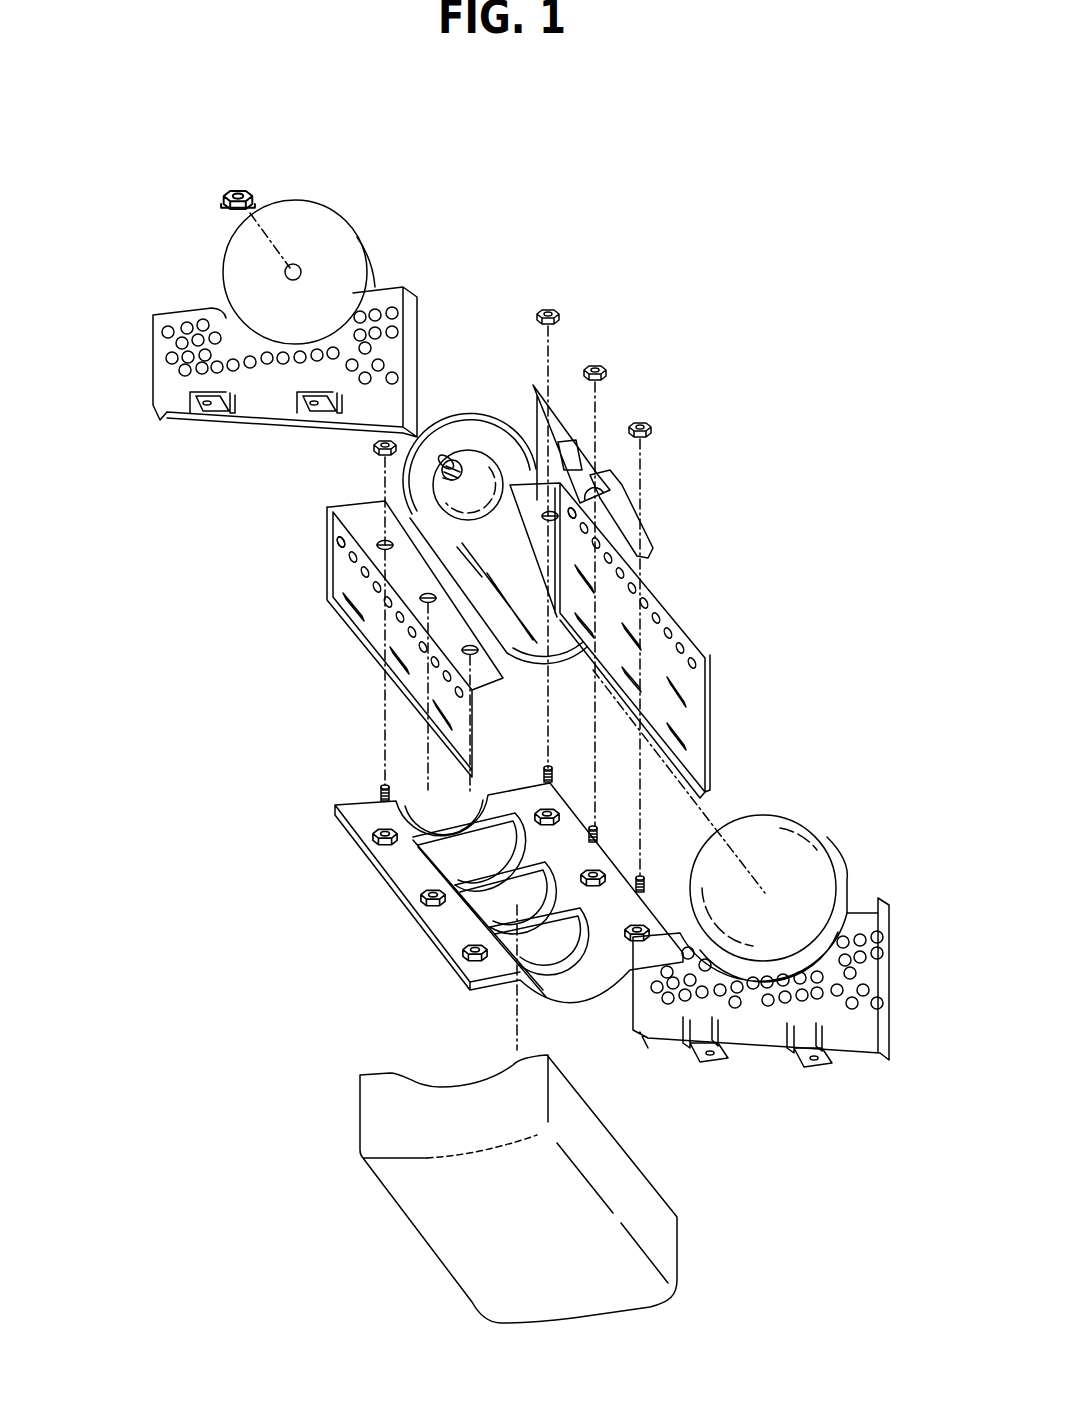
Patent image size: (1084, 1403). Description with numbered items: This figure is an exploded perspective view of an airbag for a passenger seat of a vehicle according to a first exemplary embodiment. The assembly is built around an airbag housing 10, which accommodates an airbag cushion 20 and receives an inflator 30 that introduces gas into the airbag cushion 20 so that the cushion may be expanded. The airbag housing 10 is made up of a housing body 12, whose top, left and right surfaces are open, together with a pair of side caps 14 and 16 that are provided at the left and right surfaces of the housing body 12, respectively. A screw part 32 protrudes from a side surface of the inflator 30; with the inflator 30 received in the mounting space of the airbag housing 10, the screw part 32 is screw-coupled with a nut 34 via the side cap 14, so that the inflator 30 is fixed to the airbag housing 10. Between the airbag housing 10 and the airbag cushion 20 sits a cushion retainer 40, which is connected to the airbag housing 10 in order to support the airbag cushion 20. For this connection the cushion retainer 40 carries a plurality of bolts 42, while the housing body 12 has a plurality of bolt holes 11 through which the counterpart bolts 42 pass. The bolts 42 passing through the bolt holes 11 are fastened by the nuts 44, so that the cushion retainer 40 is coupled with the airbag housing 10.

The airbag housing 10 is at (350, 650).
The bolt holes 11 is at (560, 510).
The housing body 12 is at (328, 597).
The side cap 14 is at (163, 395).
The side cap 16 is at (663, 1040).
The airbag cushion 20 is at (383, 1113).
The inflator 30 is at (487, 447).
The screw part 32 is at (452, 460).
The nut 34 is at (246, 192).
The cushion retainer 40 is at (389, 908).
The bolts 42 is at (560, 805).
The nuts 44 is at (552, 307).